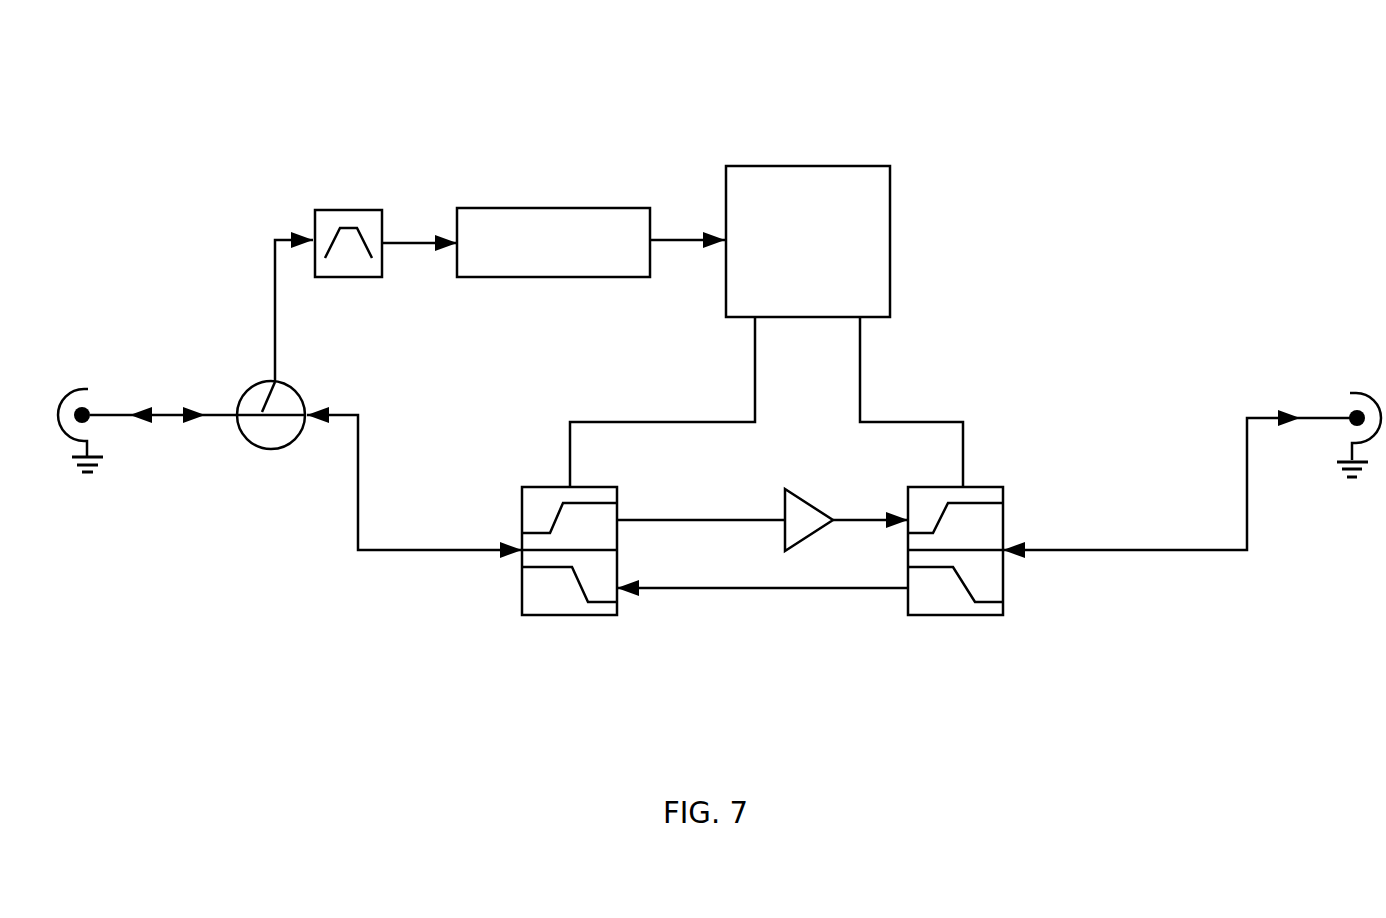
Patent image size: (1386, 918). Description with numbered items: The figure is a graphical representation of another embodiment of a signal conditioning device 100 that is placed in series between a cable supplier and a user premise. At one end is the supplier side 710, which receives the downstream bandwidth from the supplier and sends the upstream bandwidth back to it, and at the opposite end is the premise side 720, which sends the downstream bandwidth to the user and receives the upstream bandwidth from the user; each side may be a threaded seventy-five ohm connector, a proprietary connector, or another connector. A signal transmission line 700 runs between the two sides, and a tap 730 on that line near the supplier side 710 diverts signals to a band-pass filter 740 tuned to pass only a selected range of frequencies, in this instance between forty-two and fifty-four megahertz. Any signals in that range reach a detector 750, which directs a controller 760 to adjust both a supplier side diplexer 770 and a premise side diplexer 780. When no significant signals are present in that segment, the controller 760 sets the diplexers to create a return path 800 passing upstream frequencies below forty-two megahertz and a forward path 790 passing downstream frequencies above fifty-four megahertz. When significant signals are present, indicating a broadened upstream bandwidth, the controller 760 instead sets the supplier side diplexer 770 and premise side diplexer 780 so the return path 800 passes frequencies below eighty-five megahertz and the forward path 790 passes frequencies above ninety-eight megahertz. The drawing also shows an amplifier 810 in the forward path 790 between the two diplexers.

The signal conditioning device 100 is at (977, 105).
The signal transmission line 700 is at (165, 417).
The supplier side 710 is at (82, 389).
The premise side 720 is at (1366, 393).
The tap 730 is at (257, 383).
The band-pass filter 740 is at (345, 210).
The detector 750 is at (533, 208).
The controller 760 is at (803, 166).
The supplier side diplexer 770 is at (567, 615).
The premise side diplexer 780 is at (953, 615).
The forward path 790 is at (740, 520).
The return path 800 is at (810, 590).
The amplifier 810 is at (813, 503).